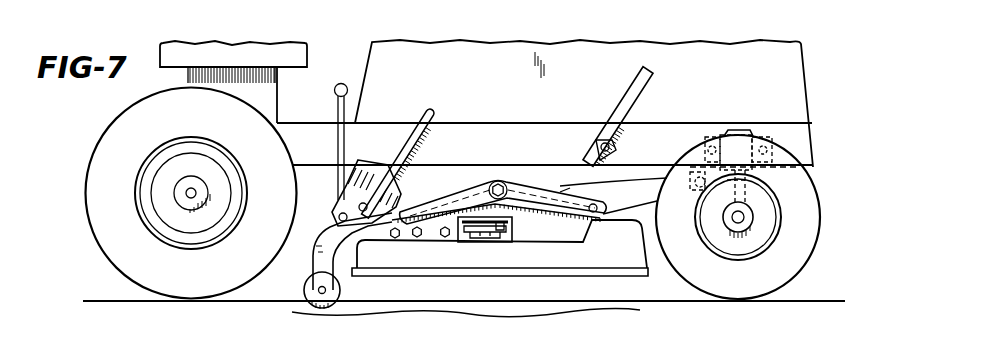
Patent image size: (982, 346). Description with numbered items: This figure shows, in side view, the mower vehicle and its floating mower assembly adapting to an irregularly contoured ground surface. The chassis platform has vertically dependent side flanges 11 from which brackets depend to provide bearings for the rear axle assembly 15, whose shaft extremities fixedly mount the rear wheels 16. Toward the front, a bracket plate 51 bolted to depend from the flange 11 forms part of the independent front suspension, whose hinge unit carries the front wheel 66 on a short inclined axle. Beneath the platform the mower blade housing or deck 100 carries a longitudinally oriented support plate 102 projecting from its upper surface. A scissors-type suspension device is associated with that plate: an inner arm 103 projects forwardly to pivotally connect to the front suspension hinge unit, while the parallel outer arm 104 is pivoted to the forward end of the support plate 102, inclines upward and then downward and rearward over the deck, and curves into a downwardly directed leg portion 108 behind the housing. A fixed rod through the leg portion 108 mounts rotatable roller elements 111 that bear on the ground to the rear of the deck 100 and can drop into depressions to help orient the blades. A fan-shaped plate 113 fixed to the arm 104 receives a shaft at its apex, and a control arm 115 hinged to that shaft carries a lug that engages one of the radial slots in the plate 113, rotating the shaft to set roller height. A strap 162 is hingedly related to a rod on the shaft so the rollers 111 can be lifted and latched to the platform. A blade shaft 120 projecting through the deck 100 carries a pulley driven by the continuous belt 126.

The flanges 11 is at (481, 127).
The rear axle assembly 15 is at (745, 215).
The wheels 16 is at (198, 125).
The bracket plate 51 is at (752, 134).
The front wheel 66 is at (806, 201).
The mower blade housing or deck 100 is at (495, 275).
The support plate 102 is at (565, 228).
The arm 103 is at (640, 187).
The arm 104 is at (542, 186).
The leg portion 108 is at (318, 238).
The roller elements 111 is at (339, 292).
The fan-shaped plate 113 is at (350, 192).
The control arm 115 is at (420, 117).
The shaft 120 is at (473, 236).
The belt 126 is at (502, 231).
The strap 162 is at (339, 83).